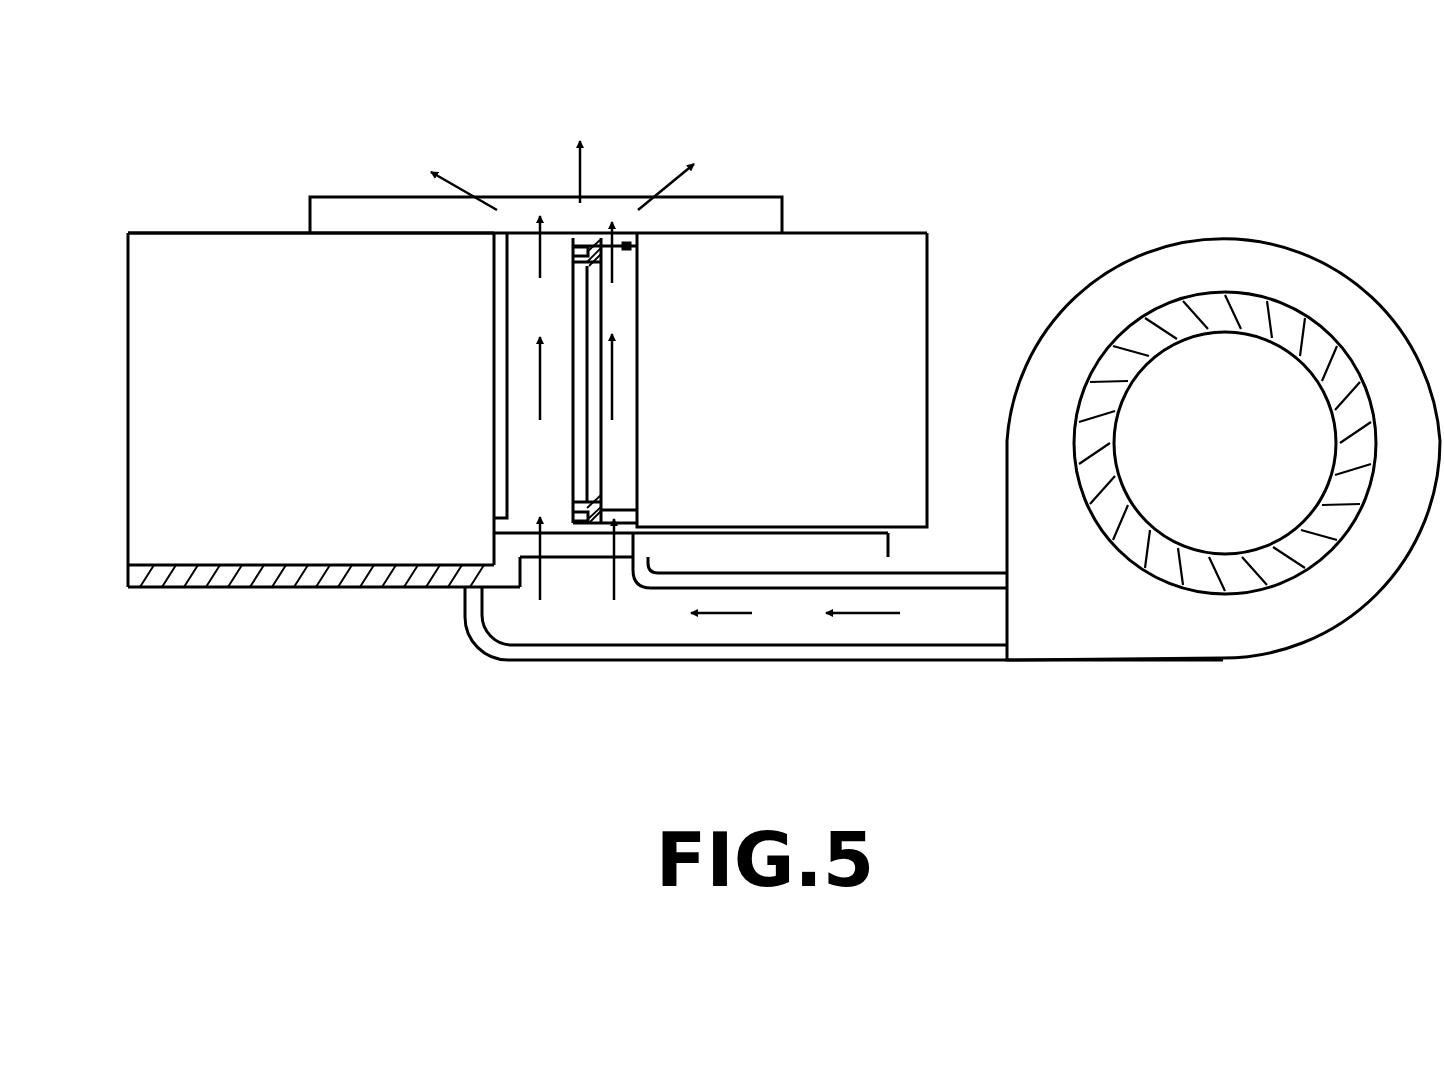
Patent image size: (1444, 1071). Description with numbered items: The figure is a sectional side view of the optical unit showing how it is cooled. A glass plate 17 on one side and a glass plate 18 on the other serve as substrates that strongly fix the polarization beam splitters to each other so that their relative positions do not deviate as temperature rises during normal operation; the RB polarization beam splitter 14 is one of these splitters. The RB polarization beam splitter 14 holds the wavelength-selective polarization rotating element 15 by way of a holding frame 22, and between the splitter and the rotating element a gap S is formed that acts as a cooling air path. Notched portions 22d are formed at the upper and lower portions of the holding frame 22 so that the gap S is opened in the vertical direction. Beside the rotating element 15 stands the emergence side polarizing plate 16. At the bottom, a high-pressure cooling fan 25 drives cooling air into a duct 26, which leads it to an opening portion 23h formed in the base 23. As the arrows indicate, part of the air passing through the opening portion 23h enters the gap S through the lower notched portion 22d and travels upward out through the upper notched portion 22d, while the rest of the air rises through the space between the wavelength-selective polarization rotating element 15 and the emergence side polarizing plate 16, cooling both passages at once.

The RB polarization beam splitter 14 is at (828, 255).
The wavelength-selective polarization rotating element 15 is at (577, 265).
The emergence side polarizing plate 16 is at (510, 250).
The glass plate 17 is at (226, 240).
The glass plate 18 is at (740, 207).
The holding frame 22 is at (600, 246).
The notched portion 22d is at (670, 272).
The base 23 is at (327, 578).
The opening portion 23h is at (505, 573).
The high-pressure cooling fan 25 is at (1140, 255).
The duct 26 is at (738, 662).
The gap S is at (622, 371).